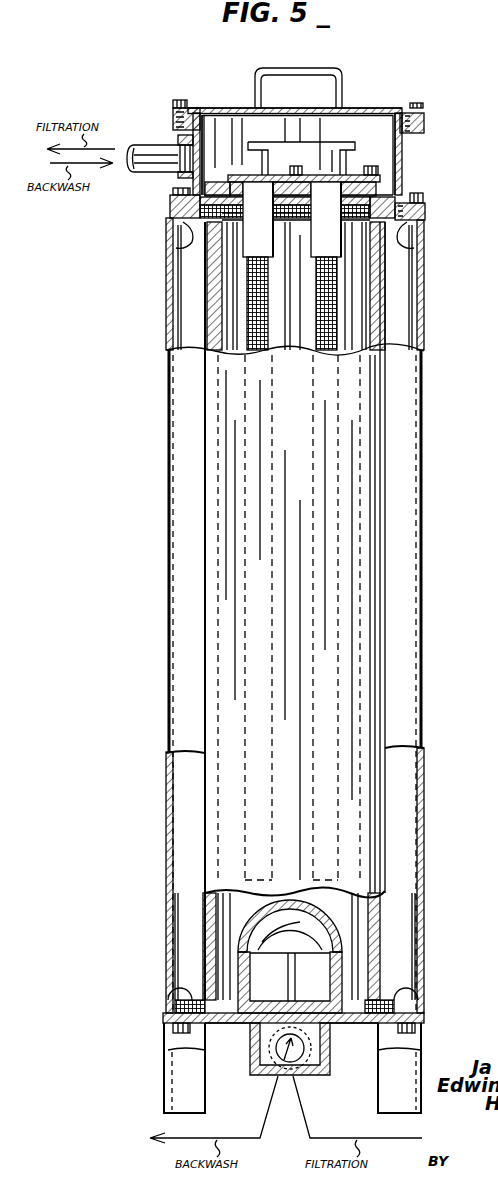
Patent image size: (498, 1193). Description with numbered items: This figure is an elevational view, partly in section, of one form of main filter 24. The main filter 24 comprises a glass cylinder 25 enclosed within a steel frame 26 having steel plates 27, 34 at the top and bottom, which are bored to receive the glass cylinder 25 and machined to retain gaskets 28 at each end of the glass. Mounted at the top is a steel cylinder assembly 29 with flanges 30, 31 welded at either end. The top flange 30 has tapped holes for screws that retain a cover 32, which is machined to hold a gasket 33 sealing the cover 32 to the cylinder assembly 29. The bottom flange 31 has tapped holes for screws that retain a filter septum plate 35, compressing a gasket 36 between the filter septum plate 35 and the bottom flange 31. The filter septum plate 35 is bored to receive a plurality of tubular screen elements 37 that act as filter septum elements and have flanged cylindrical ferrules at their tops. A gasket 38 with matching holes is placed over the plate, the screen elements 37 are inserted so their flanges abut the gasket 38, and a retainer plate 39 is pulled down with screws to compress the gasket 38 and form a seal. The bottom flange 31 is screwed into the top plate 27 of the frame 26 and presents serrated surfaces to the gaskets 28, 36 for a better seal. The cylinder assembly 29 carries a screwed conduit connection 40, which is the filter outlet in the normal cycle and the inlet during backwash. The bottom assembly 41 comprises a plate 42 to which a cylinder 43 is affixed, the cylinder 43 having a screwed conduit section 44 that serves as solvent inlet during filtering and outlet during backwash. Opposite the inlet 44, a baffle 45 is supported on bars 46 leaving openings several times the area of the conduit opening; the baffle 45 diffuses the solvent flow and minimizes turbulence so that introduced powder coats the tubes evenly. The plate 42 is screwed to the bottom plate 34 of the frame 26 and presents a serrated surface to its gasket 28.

The main filter 24 is at (433, 400).
The glass cylinder 25 is at (330, 392).
The steel frame 26 is at (398, 300).
The top plate 27 is at (193, 228).
The gaskets 28 is at (408, 240).
The cylinder assembly 29 is at (437, 120).
The top flange 30 is at (424, 133).
The bottom flange 31 is at (424, 207).
The cover 32 is at (381, 108).
The gasket 33 is at (403, 113).
The bottom plate 34 is at (186, 996).
The filter septum plate 35 is at (205, 180).
The gasket 36 is at (392, 263).
The tubular screen elements 37 is at (326, 318).
The gasket 38 is at (364, 188).
The retainer plate 39 is at (350, 177).
The screwed conduit connection 40 is at (150, 158).
The bottom assembly 41 is at (218, 1063).
The plate 42 is at (291, 1038).
The cylinder 43 is at (327, 1048).
The screwed conduit section 44 is at (302, 1060).
The baffle 45 is at (322, 924).
The bars 46 is at (302, 962).